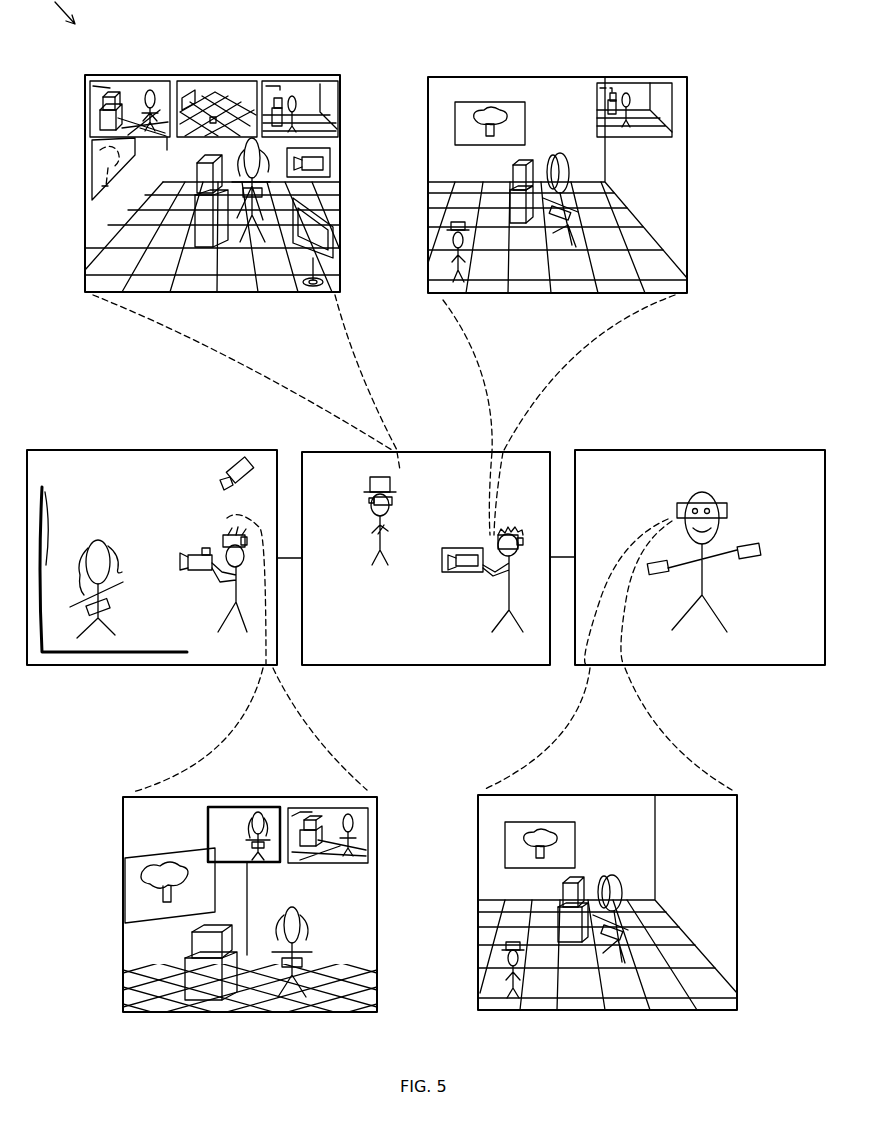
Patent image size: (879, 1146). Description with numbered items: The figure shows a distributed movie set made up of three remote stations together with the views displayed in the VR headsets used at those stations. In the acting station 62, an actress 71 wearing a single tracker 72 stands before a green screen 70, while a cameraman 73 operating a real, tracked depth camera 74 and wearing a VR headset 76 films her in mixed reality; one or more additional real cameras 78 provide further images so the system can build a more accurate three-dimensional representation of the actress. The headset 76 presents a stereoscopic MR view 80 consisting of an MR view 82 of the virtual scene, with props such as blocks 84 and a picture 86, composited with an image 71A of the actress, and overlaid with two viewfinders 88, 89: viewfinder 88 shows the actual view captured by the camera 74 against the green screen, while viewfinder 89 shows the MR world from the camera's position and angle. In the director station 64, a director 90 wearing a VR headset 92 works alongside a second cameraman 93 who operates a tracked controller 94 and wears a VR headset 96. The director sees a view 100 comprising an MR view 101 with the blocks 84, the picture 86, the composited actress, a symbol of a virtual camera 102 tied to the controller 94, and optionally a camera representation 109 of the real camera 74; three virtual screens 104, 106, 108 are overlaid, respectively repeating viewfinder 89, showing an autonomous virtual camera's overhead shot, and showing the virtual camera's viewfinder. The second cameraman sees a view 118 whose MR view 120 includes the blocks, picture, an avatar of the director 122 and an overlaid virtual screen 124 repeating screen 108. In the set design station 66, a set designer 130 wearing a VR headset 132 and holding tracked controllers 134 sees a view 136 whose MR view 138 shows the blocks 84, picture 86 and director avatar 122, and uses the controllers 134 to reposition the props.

The acting station 62 is at (100, 450).
The director station 64 is at (333, 452).
The set design station 66 is at (710, 450).
The green screen 70 is at (47, 506).
The actress 71 is at (95, 540).
The tracker 72 is at (113, 605).
The cameraman 73 is at (223, 625).
The tracked depth camera 74 is at (200, 558).
The VR headset 76 is at (222, 540).
The additional real camera 78 is at (233, 465).
The stereoscopic MR view 80 is at (123, 815).
The MR view 82 is at (135, 953).
The blocks 84 is at (193, 177).
The picture 86 is at (93, 168).
The viewfinder 88 is at (222, 807).
The viewfinder 89 is at (333, 808).
The director 90 is at (370, 482).
The VR headset 92 is at (392, 500).
The second cameraman 93 is at (500, 605).
The tracked controller 94 is at (455, 572).
The VR headset 96 is at (493, 540).
The view 100 is at (85, 230).
The MR view 101 is at (100, 246).
The virtual camera 102 is at (337, 160).
The virtual screen 104 is at (133, 80).
The virtual screen 106 is at (213, 80).
The virtual screen 108 is at (303, 80).
The camera representation 109 is at (332, 235).
The view 118 is at (685, 187).
The MR view 120 is at (672, 233).
The avatar of the director 122 is at (455, 265).
The virtual screen 124 is at (640, 83).
The set designer 130 is at (700, 492).
The VR headset 132 is at (727, 510).
The tracked controllers 134 is at (760, 545).
The view 136 is at (737, 872).
The MR view 138 is at (728, 932).
The image of the actress 71A is at (612, 880).